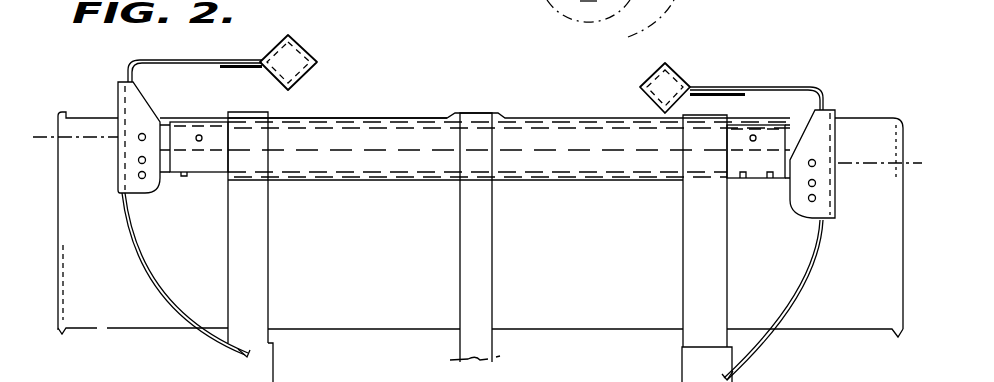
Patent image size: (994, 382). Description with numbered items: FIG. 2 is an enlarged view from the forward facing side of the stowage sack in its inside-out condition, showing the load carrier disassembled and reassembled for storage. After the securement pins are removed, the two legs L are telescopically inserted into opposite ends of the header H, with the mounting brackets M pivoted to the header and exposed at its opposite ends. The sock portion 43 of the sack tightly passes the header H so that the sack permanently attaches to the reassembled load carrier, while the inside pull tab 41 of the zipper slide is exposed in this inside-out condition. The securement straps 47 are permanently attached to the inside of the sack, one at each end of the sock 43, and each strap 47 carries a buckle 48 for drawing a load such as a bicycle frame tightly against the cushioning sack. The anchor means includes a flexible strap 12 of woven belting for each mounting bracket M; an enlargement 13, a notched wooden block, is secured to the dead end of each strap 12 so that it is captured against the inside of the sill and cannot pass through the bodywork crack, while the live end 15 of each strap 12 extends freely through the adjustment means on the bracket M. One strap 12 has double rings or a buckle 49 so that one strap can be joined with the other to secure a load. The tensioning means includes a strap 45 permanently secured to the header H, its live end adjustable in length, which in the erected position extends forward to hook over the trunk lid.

The flexible strap 12 is at (157, 288).
The enlargement 13 is at (293, 60).
The live end 15 is at (220, 340).
The inside pull tab 41 is at (258, 292).
The sock portion 43 is at (560, 128).
The strap 45 is at (483, 231).
The securement strap 47 is at (697, 259).
The buckle 48 is at (273, 364).
The buckle 49 is at (400, 3).
The header H is at (221, 172).
The leg L is at (398, 123).
The mounting bracket M is at (118, 100).